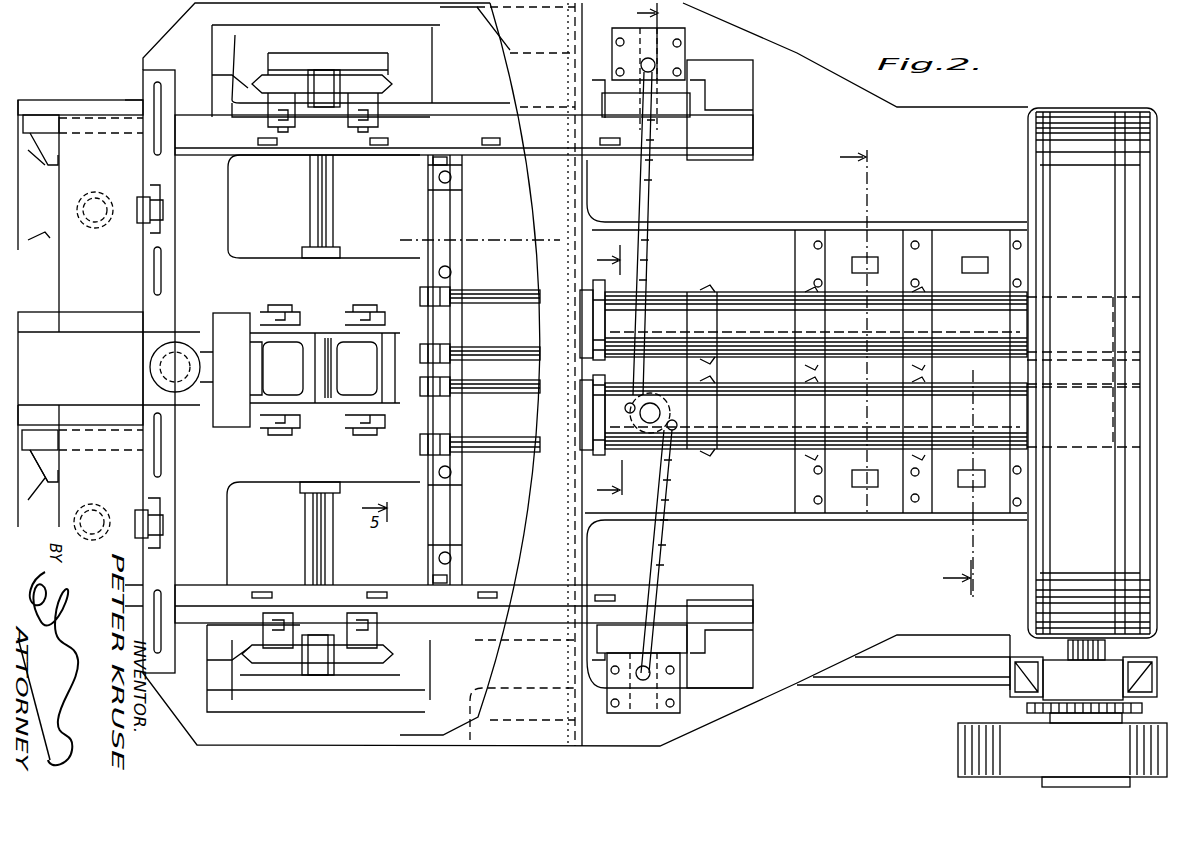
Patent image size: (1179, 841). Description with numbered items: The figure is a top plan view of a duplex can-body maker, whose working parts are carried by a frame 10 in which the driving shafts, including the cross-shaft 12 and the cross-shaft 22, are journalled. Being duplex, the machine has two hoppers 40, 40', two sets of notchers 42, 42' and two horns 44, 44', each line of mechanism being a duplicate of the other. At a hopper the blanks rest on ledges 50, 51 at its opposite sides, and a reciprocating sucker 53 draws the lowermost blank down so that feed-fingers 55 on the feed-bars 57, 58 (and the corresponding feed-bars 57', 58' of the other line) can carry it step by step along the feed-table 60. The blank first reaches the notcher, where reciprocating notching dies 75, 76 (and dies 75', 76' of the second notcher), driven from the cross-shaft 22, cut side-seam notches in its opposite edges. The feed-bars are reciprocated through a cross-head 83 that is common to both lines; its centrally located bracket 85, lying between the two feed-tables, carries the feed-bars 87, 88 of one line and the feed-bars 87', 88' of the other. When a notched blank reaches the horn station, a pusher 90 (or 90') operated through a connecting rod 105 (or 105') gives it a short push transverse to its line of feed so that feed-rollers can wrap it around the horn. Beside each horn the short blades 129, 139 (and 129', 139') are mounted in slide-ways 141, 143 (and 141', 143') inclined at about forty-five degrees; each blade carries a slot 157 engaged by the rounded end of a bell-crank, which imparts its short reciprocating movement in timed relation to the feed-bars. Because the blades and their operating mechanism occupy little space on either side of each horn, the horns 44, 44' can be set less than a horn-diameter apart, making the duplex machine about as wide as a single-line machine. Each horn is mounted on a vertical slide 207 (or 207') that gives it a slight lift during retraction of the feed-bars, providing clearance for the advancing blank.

The frame 10 is at (1075, 107).
The cross-shaft 12 is at (1020, 637).
The cross-shaft 22 is at (330, 530).
The hopper 40 is at (90, 476).
The hopper 40' is at (96, 371).
The notcher 42 is at (318, 668).
The notcher 42' is at (361, 71).
The horn 44 is at (728, 426).
The horn 44' is at (719, 306).
The ledge 50 is at (38, 118).
The ledge 51 is at (48, 315).
The sucker 53 is at (95, 205).
The feed-fingers 55 is at (40, 490).
The feed-bar 57 is at (439, 534).
The feed-bar 57' is at (439, 145).
The feed-bar 58 is at (323, 533).
The feed-bar 58' is at (324, 219).
The feed-table 60 is at (484, 374).
The notching die 75 is at (312, 654).
The notching die 75' is at (322, 88).
The notching die 76 is at (322, 432).
The notching die 76' is at (296, 180).
The cross-head 83 is at (462, 528).
The bracket 85 is at (440, 418).
The feed-bar 87 is at (723, 404).
The feed-bar 87' is at (723, 308).
The feed-bar 88 is at (654, 441).
The feed-bar 88' is at (605, 352).
The pusher 90 is at (672, 656).
The pusher 90' is at (672, 81).
The connecting rod 105 is at (658, 457).
The connecting rod 105' is at (673, 252).
The blade 129 is at (851, 512).
The blade 129' is at (863, 324).
The blade 139 is at (982, 486).
The blade 139' is at (1003, 349).
The slide-way 141 is at (786, 437).
The slide-way 141' is at (802, 351).
The slide-way 143 is at (905, 464).
The slide-way 143' is at (932, 349).
The slot 157 is at (870, 262).
The vertical slide 207 is at (574, 415).
The vertical slide 207' is at (574, 320).